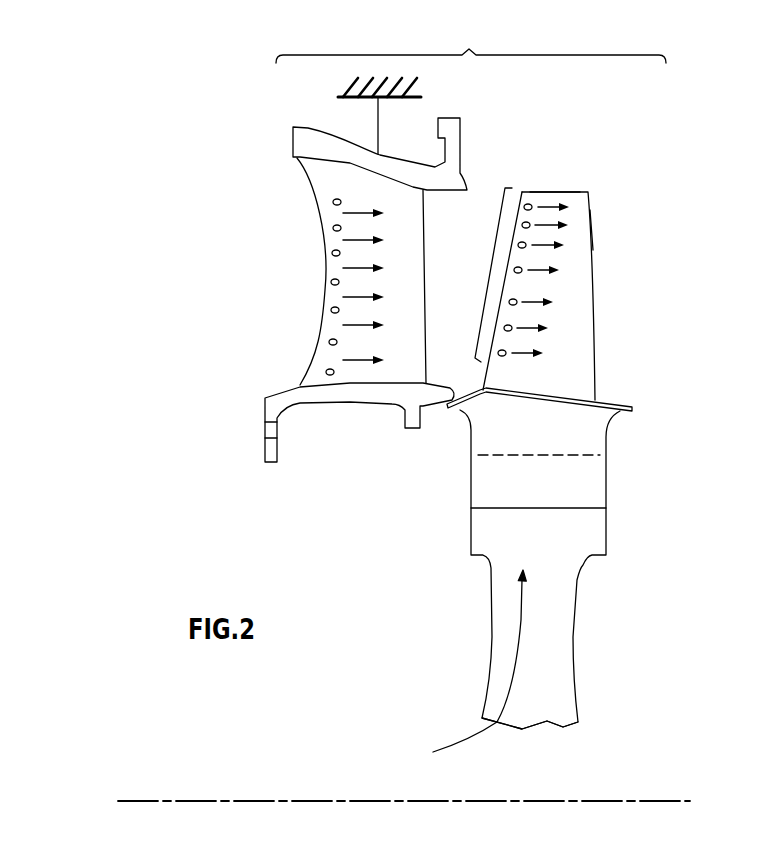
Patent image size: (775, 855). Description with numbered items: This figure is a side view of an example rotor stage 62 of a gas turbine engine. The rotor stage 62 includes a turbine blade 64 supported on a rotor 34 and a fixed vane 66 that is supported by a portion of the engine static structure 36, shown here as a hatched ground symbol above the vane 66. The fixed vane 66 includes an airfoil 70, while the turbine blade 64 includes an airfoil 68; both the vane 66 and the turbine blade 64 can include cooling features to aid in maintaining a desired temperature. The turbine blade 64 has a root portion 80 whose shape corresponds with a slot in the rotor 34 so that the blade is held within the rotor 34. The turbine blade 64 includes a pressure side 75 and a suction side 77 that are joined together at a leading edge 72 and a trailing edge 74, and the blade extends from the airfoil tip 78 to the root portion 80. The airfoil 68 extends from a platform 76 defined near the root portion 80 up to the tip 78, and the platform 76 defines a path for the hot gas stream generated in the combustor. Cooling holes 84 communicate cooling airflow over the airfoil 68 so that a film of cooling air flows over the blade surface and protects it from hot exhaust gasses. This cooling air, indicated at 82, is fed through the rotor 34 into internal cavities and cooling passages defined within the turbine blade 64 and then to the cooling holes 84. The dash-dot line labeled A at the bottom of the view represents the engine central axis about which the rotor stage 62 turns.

The rotor stage 62 is at (471, 45).
The engine static structure 36 is at (418, 82).
The fixed vane 66 is at (339, 290).
The airfoil 70 is at (348, 317).
The turbine blade 64 is at (574, 441).
The trailing edge 74 is at (554, 265).
The airfoil 68 is at (580, 215).
The airfoil tip 78 is at (564, 185).
The pressure side 75 is at (600, 245).
The suction side 77 is at (568, 300).
The leading edge 72 is at (496, 292).
The cooling holes 84 is at (489, 279).
The platform 76 is at (631, 396).
The root portion 80 is at (622, 447).
The cooling air 82 is at (516, 663).
The rotor 34 is at (550, 652).
The engine central axis A is at (645, 801).